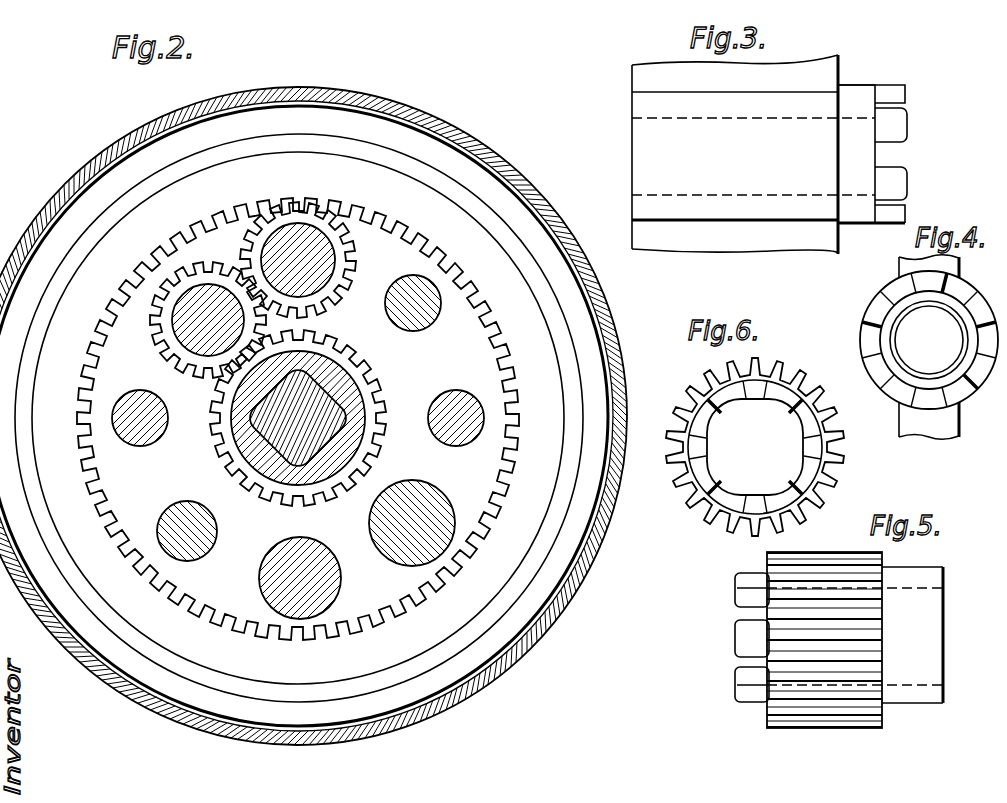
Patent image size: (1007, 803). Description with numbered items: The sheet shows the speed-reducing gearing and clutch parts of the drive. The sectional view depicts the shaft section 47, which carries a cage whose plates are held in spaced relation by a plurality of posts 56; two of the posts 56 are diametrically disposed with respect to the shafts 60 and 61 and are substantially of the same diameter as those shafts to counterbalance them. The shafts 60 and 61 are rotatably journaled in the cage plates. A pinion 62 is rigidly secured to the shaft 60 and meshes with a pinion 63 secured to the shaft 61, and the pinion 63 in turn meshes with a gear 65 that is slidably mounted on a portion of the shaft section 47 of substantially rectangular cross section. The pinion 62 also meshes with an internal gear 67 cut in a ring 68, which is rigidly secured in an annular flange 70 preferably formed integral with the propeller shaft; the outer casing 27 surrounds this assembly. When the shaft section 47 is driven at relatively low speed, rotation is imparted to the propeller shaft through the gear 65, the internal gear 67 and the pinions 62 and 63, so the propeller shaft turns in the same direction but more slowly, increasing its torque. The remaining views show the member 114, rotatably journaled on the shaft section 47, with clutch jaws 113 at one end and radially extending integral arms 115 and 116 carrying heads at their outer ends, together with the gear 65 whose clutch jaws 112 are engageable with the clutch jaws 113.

In FIG. 2, the casing ring 27 is at (22, 254).
In FIG. 2, the shaft section 47 is at (331, 361).
In FIG. 2, the posts 56 is at (298, 548).
In FIG. 2, the shaft 60 is at (296, 226).
In FIG. 2, the shaft 61 is at (193, 292).
In FIG. 2, the pinion 62 is at (339, 208).
In FIG. 2, the pinion 63 is at (219, 268).
In FIG. 2, the gear 65 is at (383, 453).
In FIG. 6, the gear 65 is at (697, 503).
In FIG. 5, the gear 65 is at (822, 552).
In FIG. 2, the internal gear 67 is at (431, 248).
In FIG. 2, the ring 68 is at (90, 307).
In FIG. 2, the annular flange 70 is at (210, 158).
In FIG. 6, the clutch jaws 112 is at (698, 447).
In FIG. 5, the clutch jaws 112 is at (738, 622).
In FIG. 3, the clutch jaws 113 is at (901, 120).
In FIG. 4, the clutch jaws 113 is at (996, 283).
In FIG. 3, the member 114 is at (820, 98).
In FIG. 3, the arm 115 is at (658, 75).
In FIG. 4, the arm 115 is at (955, 269).
In FIG. 3, the arm 116 is at (727, 230).
In FIG. 4, the arm 116 is at (958, 425).